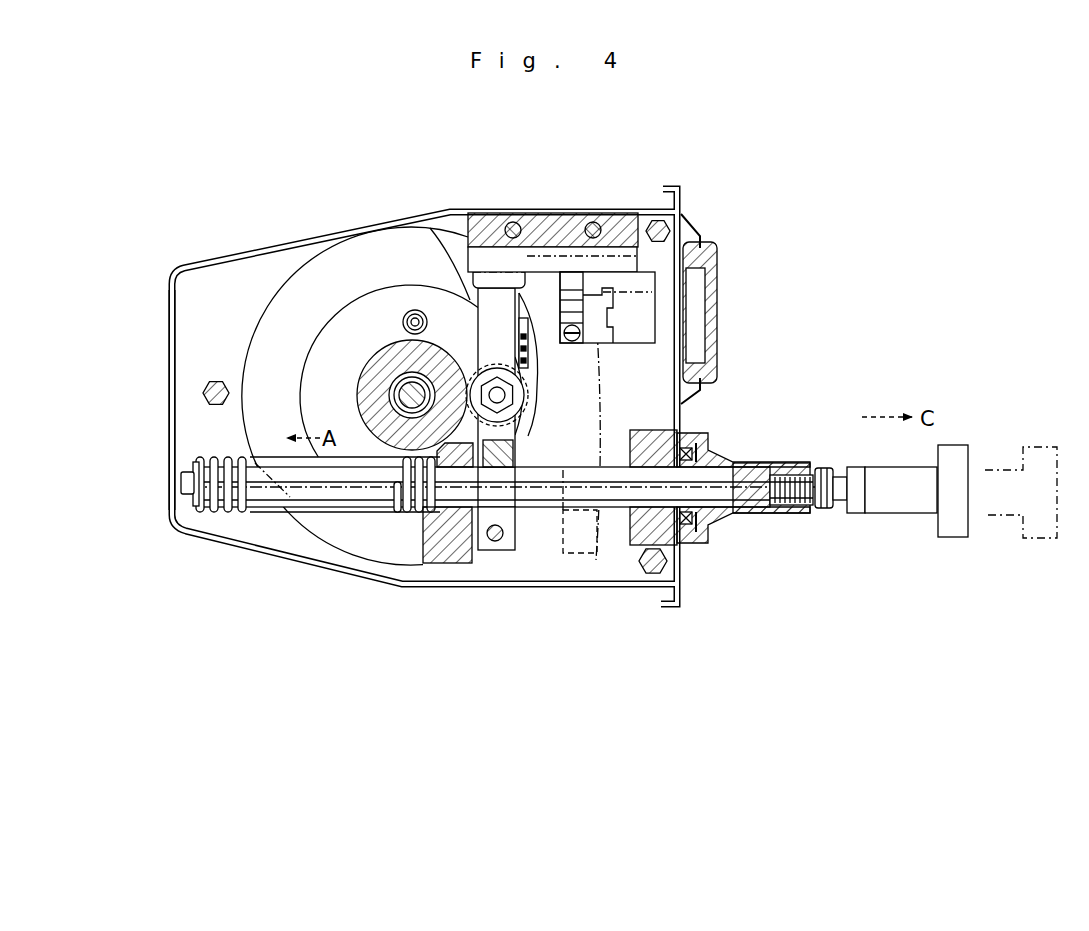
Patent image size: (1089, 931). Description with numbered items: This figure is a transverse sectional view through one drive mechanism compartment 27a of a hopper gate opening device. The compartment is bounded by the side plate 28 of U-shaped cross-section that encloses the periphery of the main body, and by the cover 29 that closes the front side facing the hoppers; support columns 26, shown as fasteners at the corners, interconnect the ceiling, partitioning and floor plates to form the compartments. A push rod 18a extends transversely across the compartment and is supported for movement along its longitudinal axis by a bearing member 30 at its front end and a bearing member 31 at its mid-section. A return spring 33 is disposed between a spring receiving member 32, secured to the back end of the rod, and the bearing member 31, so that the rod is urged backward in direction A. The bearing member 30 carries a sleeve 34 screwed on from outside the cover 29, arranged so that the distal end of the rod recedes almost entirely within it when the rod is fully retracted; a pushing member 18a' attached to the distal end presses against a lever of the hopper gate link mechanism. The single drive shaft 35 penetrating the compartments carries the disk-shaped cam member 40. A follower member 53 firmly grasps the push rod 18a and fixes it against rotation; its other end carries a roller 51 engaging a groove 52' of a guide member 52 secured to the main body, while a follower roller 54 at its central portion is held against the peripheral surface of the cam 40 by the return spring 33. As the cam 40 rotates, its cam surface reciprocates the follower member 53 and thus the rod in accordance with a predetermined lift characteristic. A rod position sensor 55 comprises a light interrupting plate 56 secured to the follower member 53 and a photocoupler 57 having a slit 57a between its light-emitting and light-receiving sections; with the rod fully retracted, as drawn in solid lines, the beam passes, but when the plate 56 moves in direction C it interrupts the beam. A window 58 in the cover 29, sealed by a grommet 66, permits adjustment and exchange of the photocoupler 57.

The drive mechanism compartment 27a is at (212, 288).
The side plate 28 is at (169, 422).
The support column 26 is at (654, 216).
The cam member 40 is at (273, 341).
The drive shaft 35 is at (405, 388).
The push rod 18a is at (510, 546).
The return spring 33 is at (222, 513).
The spring receiving member 32 is at (196, 502).
The bearing member 31 is at (452, 562).
The follower member 53 is at (483, 328).
The roller 51 is at (474, 276).
The follower roller 54 is at (521, 414).
The rod position sensor 55 is at (539, 436).
The light interrupting plate 56 is at (527, 362).
The guide member 52 is at (553, 204).
The groove 52' is at (552, 222).
The slit 57a is at (587, 294).
The photocoupler 57 is at (575, 337).
The grommet 66 is at (713, 259).
The window 58 is at (700, 314).
The bearing member 30 is at (652, 433).
The cover 29 is at (680, 563).
The sleeve 34 is at (765, 514).
The pushing member 18a' is at (936, 508).